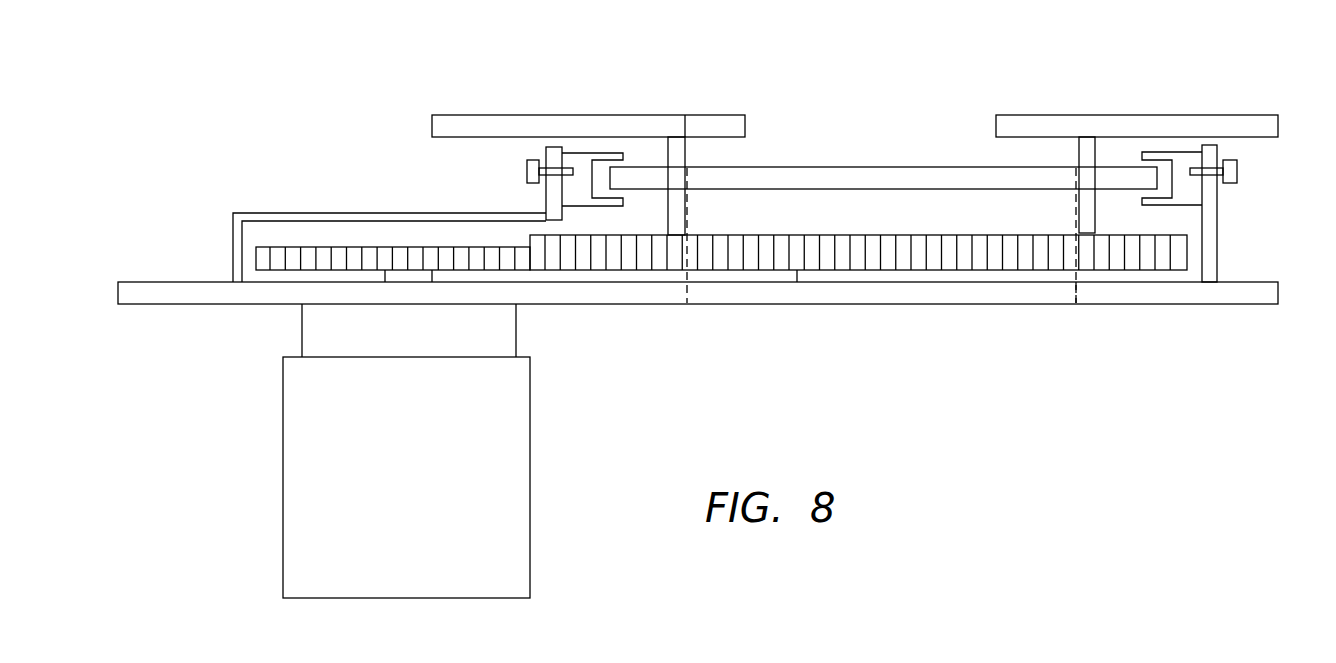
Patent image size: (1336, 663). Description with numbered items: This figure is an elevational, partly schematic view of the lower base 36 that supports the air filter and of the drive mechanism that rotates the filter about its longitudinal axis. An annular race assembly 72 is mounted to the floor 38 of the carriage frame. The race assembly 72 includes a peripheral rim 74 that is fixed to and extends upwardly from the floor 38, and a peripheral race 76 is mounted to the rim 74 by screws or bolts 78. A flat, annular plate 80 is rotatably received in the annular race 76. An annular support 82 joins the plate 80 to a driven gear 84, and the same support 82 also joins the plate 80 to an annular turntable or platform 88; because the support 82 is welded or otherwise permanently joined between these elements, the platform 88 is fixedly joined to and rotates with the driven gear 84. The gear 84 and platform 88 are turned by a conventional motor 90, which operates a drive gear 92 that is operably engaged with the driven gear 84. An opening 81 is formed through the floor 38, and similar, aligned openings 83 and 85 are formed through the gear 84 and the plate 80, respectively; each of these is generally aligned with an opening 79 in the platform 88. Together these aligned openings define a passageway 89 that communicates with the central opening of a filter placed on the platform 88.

The base 36 is at (1294, 113).
The floor 38 is at (932, 296).
The race assembly 72 is at (1219, 218).
The rim 74 is at (290, 213).
The race 76 is at (585, 152).
The bolts 78 is at (527, 172).
The opening 79 is at (745, 128).
The plate 80 is at (837, 173).
The opening 81 is at (1075, 290).
The support 82 is at (685, 205).
The opening 83 is at (1075, 247).
The driven gear 84 is at (797, 272).
The opening 85 is at (683, 180).
The platform 88 is at (685, 115).
The passageway 89 is at (874, 82).
The motor 90 is at (530, 497).
The drive gear 92 is at (402, 247).